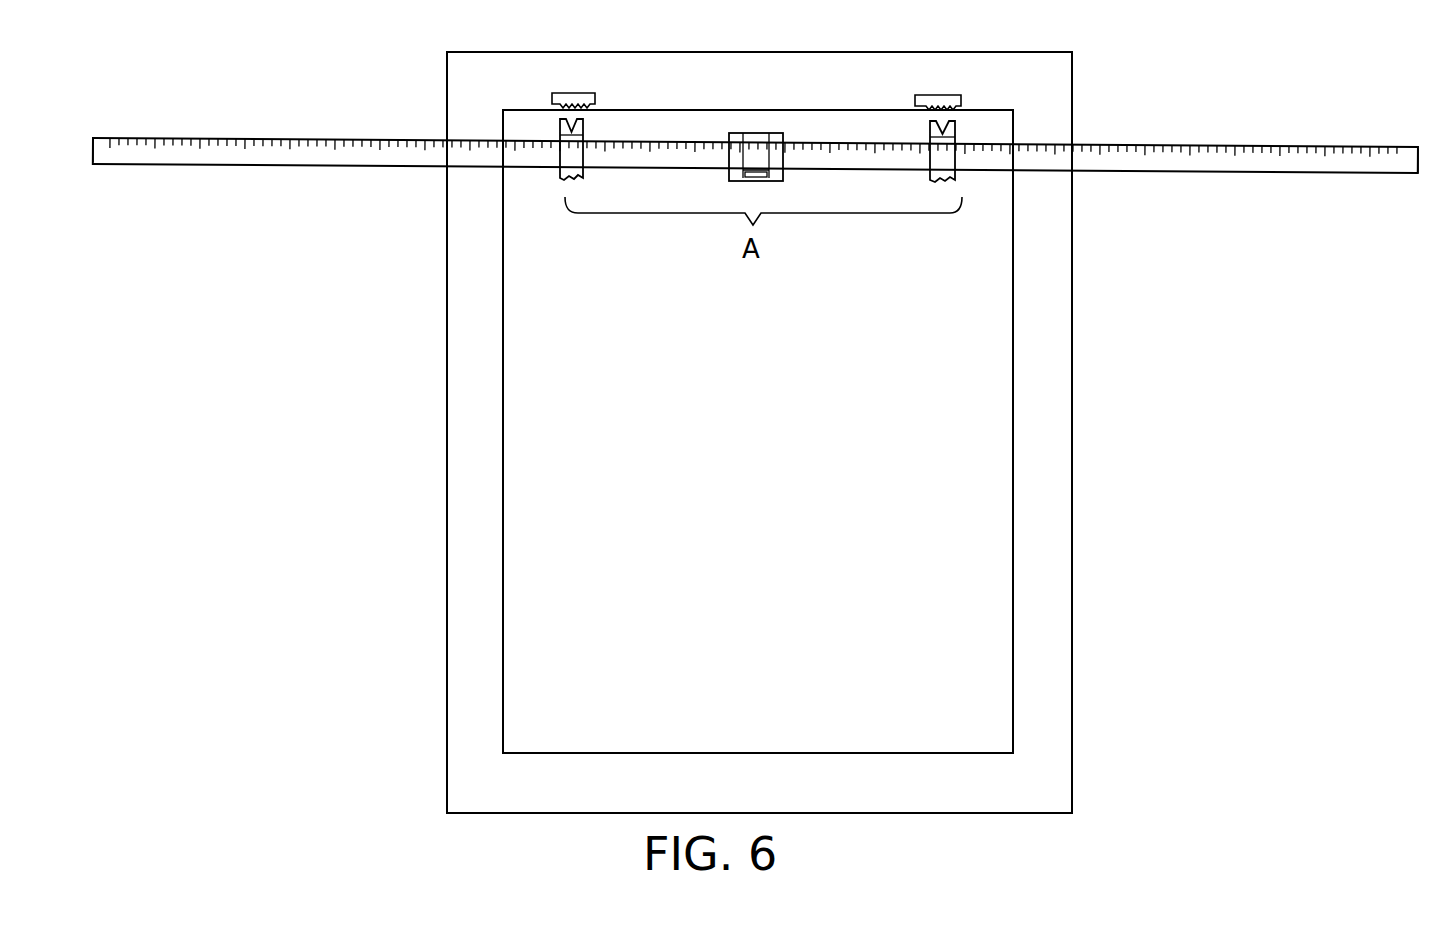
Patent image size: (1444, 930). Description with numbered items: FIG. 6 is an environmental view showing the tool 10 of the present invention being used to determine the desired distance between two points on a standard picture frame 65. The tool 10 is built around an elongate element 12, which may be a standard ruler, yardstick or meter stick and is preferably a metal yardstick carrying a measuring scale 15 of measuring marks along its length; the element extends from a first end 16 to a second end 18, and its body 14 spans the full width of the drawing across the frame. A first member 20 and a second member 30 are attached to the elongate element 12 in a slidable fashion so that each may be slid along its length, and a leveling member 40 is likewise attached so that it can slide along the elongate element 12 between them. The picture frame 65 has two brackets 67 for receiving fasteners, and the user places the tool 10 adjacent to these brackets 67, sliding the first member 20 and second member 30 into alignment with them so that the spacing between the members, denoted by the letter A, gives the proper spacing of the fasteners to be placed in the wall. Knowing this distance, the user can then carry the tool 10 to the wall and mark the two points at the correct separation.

The tool 10 is at (1148, 114).
The elongate element 12 is at (1050, 160).
The ruler body 14 is at (523, 158).
The measuring scale 15 is at (602, 146).
The first end 16 is at (102, 155).
The second end 18 is at (1404, 161).
The first member 20 is at (579, 176).
The second member 30 is at (933, 178).
The leveling member 40 is at (777, 135).
The picture frame 65 is at (1053, 482).
The brackets 67 is at (566, 93).